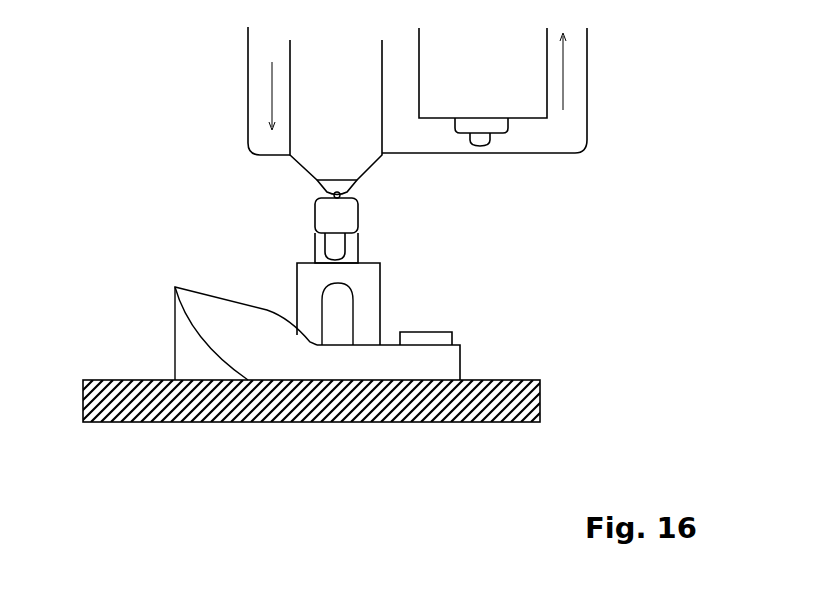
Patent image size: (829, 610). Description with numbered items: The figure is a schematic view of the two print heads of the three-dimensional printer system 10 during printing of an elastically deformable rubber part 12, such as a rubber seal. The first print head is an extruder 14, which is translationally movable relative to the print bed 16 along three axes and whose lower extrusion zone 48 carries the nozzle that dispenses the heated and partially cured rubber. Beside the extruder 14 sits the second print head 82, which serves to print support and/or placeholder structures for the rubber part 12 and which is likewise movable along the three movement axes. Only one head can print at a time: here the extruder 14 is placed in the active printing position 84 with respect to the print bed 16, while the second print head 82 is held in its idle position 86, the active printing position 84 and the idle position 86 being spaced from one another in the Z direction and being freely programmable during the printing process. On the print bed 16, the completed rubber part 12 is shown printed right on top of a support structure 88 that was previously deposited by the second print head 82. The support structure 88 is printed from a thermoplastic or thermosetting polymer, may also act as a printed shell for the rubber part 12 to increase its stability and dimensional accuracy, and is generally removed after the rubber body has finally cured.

The 3D-printer system 10 is at (243, 72).
The extruder 14 is at (343, 90).
The second print head 82 is at (496, 72).
The idle position 86 is at (579, 72).
The lower extrusion zone 48 is at (322, 193).
The active printing position 84 is at (244, 190).
The rubber part 12 is at (364, 250).
The support structure 88 is at (262, 355).
The print bed 16 is at (99, 377).